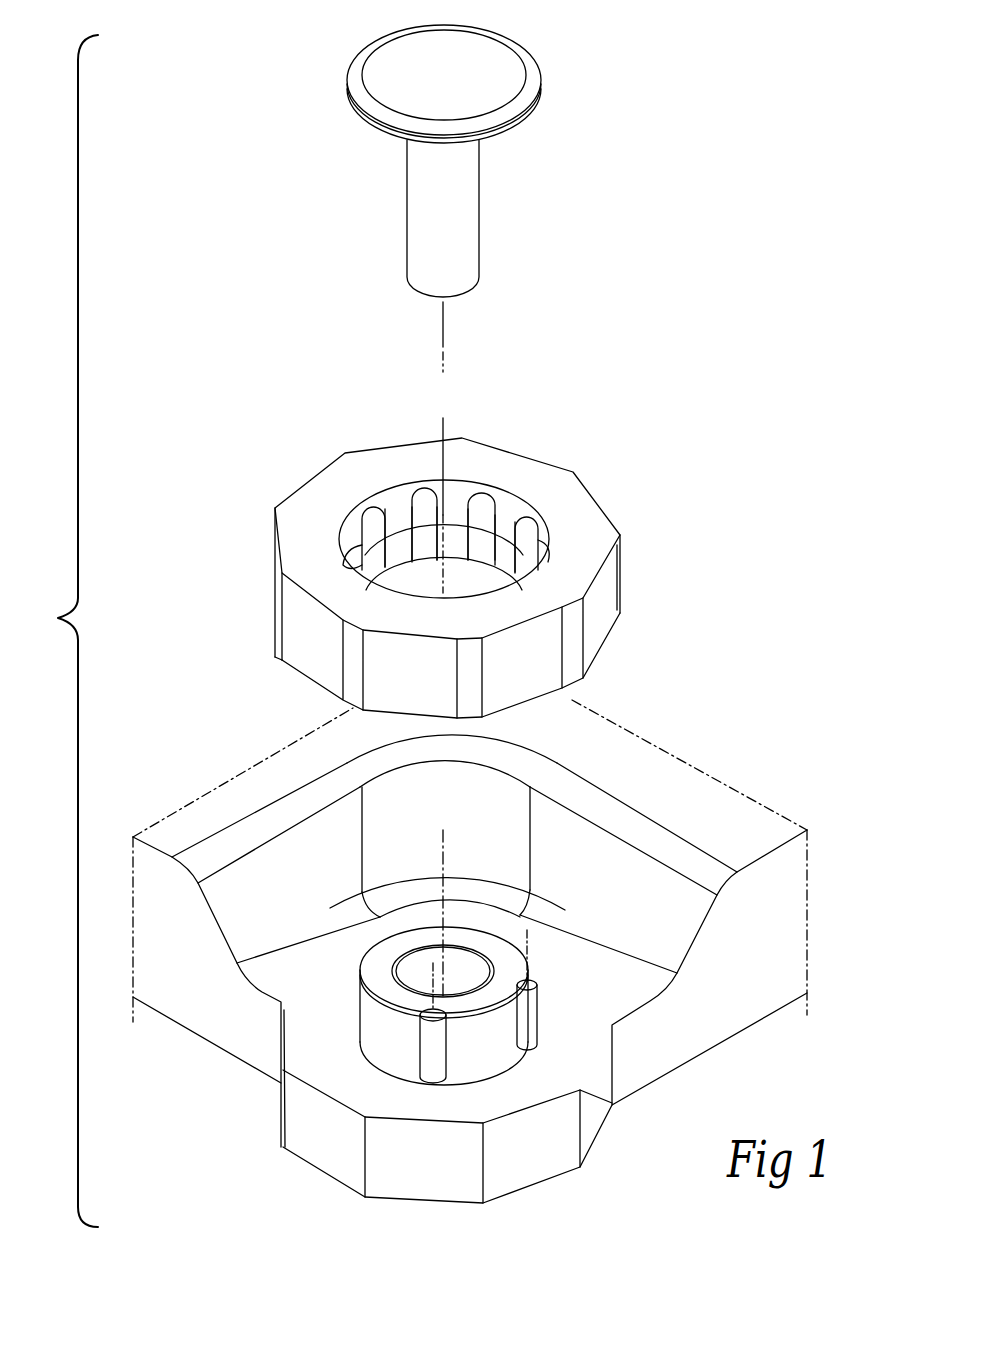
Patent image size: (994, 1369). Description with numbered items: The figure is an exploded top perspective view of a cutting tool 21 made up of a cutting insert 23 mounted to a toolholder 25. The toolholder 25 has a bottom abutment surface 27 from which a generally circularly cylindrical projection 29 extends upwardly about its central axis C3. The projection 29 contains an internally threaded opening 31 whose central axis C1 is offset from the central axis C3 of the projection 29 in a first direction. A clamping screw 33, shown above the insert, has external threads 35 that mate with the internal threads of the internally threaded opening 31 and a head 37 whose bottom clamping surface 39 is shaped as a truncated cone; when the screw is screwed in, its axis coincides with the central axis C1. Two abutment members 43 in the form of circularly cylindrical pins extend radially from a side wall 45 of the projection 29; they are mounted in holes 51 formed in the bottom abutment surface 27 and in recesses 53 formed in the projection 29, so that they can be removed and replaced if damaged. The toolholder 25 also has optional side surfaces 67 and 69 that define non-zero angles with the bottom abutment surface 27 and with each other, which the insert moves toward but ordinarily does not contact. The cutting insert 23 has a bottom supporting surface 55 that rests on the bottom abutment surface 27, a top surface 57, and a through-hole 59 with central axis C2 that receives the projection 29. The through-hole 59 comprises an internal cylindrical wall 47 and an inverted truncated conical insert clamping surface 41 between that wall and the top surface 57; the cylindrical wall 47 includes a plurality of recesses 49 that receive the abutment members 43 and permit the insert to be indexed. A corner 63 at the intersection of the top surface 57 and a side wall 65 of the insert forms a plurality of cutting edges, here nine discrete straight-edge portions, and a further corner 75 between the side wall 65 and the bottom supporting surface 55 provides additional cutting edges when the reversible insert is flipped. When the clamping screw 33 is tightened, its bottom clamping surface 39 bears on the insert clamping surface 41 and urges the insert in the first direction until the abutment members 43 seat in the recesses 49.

The cutting tool 21 is at (63, 631).
The cutting insert 23 is at (446, 554).
The toolholder 25 is at (467, 971).
The bottom abutment surface 27 is at (308, 1025).
The projection 29 is at (342, 987).
The internally threaded opening 31 is at (457, 968).
The clamping screw 33 is at (463, 198).
The external threads 35 is at (428, 240).
The head 37 is at (387, 80).
The bottom clamping surface 39 is at (400, 138).
The insert clamping surface 41 is at (513, 513).
The abutment members 43 is at (407, 1023).
The side wall 45 is at (380, 1025).
The internal cylindrical wall 47 is at (397, 530).
The recesses 49 is at (423, 500).
The holes 51 is at (423, 1083).
The recesses 53 is at (450, 1040).
The bottom supporting surface 55 is at (323, 685).
The top surface 57 is at (298, 523).
The through-hole 59 is at (455, 590).
The corner 63 is at (282, 573).
The side wall 65 is at (308, 630).
The side surface 67 is at (277, 883).
The side surface 69 is at (610, 870).
The corner 75 is at (590, 657).
The central axis of the internally threaded opening C1 is at (445, 310).
The central axis of the through-hole C2 is at (442, 431).
The central axis of the projection C3 is at (443, 830).